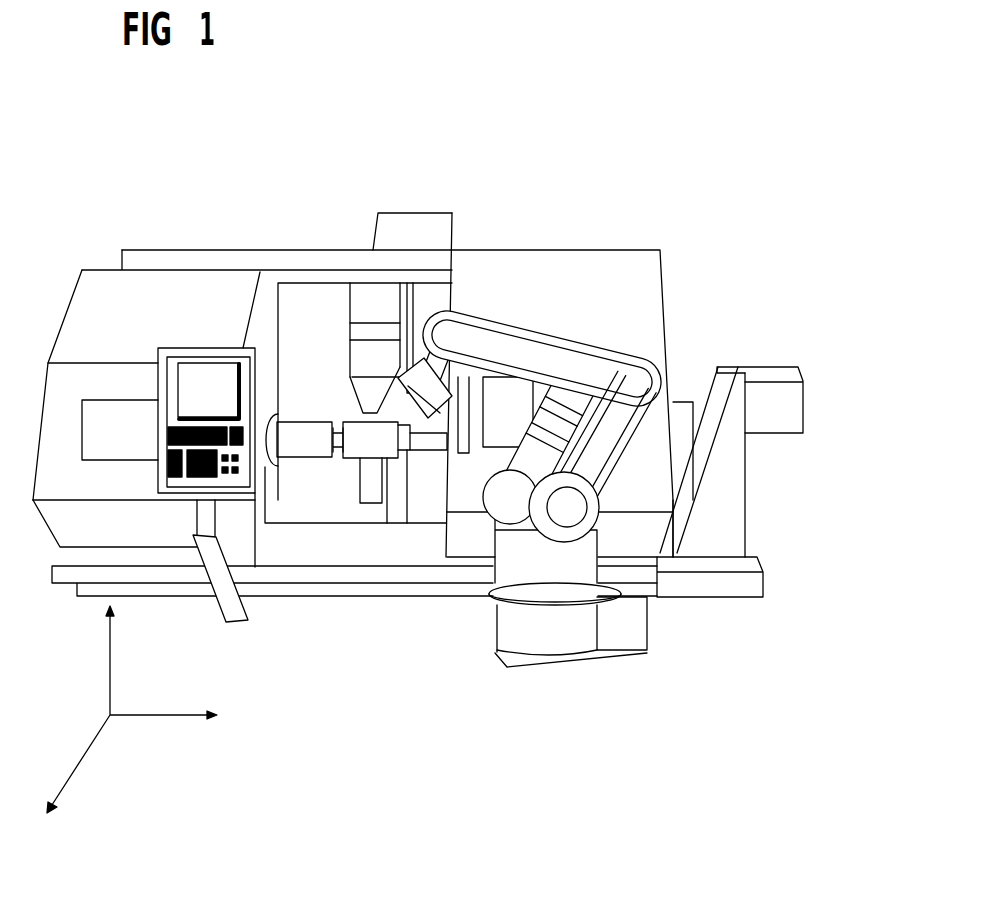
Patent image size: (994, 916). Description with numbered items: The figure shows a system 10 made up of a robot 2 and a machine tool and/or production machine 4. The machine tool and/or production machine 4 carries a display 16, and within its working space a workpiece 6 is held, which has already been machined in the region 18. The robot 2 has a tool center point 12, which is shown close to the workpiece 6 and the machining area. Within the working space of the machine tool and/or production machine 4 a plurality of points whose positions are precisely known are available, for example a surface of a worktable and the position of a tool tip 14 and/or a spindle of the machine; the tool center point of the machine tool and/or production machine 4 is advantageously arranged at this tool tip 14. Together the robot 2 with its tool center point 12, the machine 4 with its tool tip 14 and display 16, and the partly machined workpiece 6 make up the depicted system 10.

The system 10 is at (733, 213).
The machine tool and/or production machine 4 is at (167, 282).
The display 16 is at (192, 384).
The tool tip 14 is at (364, 415).
The region 18 is at (336, 458).
The tool center point 12 is at (424, 451).
The workpiece 6 is at (297, 445).
The robot 2 is at (500, 619).